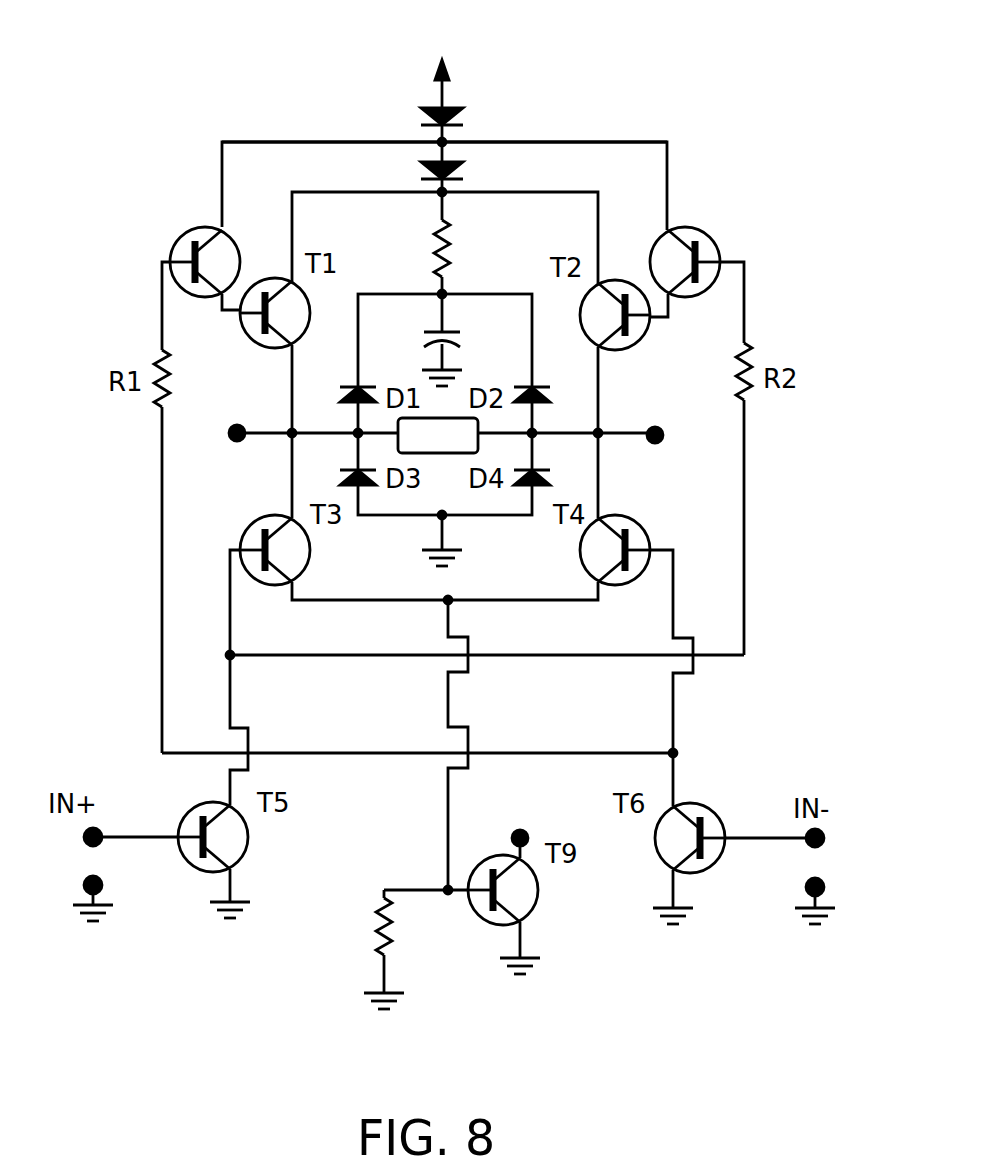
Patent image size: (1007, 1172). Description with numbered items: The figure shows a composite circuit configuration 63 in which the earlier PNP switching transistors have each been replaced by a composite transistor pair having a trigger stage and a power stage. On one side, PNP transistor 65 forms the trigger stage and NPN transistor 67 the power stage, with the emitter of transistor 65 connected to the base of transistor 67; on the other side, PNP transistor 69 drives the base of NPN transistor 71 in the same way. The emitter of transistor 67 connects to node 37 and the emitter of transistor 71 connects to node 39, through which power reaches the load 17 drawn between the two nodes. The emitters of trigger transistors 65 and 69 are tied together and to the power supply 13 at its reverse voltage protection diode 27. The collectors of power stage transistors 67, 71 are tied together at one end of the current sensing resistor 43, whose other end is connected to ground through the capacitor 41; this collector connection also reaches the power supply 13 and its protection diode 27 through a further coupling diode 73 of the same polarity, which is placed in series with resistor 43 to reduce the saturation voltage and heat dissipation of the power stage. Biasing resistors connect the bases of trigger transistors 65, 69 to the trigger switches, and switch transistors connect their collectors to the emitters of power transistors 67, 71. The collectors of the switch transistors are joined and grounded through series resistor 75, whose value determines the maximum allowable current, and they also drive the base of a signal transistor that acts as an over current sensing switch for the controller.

The power supply 13 is at (474, 44).
The reverse voltage protection diode 27 is at (518, 107).
The coupling diode 73 is at (418, 164).
The resistor 43 is at (398, 257).
The capacitor 41 is at (455, 314).
The load 17 is at (435, 418).
The PNP transistor 65 is at (200, 222).
The NPN transistor 67 is at (273, 276).
The PNP transistor 69 is at (682, 227).
The NPN transistor 71 is at (611, 277).
The node 37 is at (230, 436).
The node 39 is at (662, 442).
The series resistor 75 is at (348, 918).
The composite circuit configuration 63 is at (824, 613).